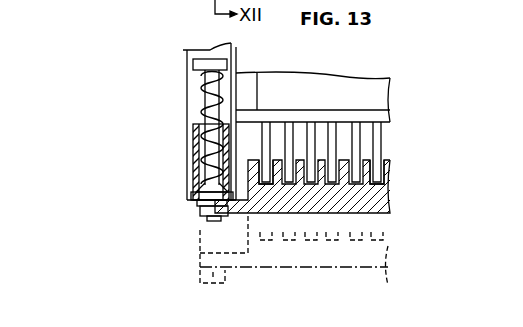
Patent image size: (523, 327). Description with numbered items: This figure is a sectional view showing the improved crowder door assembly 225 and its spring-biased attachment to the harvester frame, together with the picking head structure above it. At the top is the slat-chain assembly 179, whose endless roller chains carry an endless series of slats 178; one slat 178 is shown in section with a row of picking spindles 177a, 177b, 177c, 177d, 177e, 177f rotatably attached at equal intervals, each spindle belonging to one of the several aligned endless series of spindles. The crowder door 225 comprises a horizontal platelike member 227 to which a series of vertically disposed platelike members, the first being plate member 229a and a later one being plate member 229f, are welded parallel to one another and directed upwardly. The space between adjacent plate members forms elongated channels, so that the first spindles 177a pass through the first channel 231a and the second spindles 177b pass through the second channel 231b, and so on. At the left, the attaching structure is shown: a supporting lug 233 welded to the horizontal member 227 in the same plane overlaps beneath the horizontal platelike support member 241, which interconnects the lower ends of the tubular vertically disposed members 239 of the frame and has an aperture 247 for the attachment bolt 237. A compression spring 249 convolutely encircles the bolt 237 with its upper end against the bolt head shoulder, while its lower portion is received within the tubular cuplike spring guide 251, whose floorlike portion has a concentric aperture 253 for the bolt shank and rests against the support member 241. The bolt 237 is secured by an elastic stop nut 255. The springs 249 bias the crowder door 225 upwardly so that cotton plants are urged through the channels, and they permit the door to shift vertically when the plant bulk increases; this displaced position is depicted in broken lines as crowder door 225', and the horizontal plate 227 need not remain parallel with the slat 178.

The crowder door assembly 225 is at (44, 77).
The crowder door in displaced position 225' is at (294, 262).
The tubular vertically disposed member 239 is at (212, 48).
The attachment bolt 237 is at (193, 63).
The compression spring 249 is at (203, 76).
The spring guide 251 is at (192, 142).
The concentric aperture 253 is at (200, 184).
The horizontal platelike support member 241 is at (193, 199).
The aperture 247 is at (198, 205).
The elastic stop nut 255 is at (201, 216).
The supporting lug 233 is at (233, 216).
The first vertically disposed plate member 229a is at (264, 190).
The sixth vertically disposed plate member 229f is at (390, 182).
The first channel 231a is at (250, 213).
The second channel 231b is at (518, 0).
The horizontal platelike member 227 is at (375, 204).
The slat 178 is at (381, 115).
The slat-chain assembly 179 is at (414, 108).
The first picking spindle 177a is at (262, 132).
The second picking spindle 177b is at (285, 133).
The third picking spindle 177c is at (307, 131).
The fourth picking spindle 177d is at (328, 130).
The fifth picking spindle 177e is at (352, 130).
The sixth picking spindle 177f is at (380, 138).